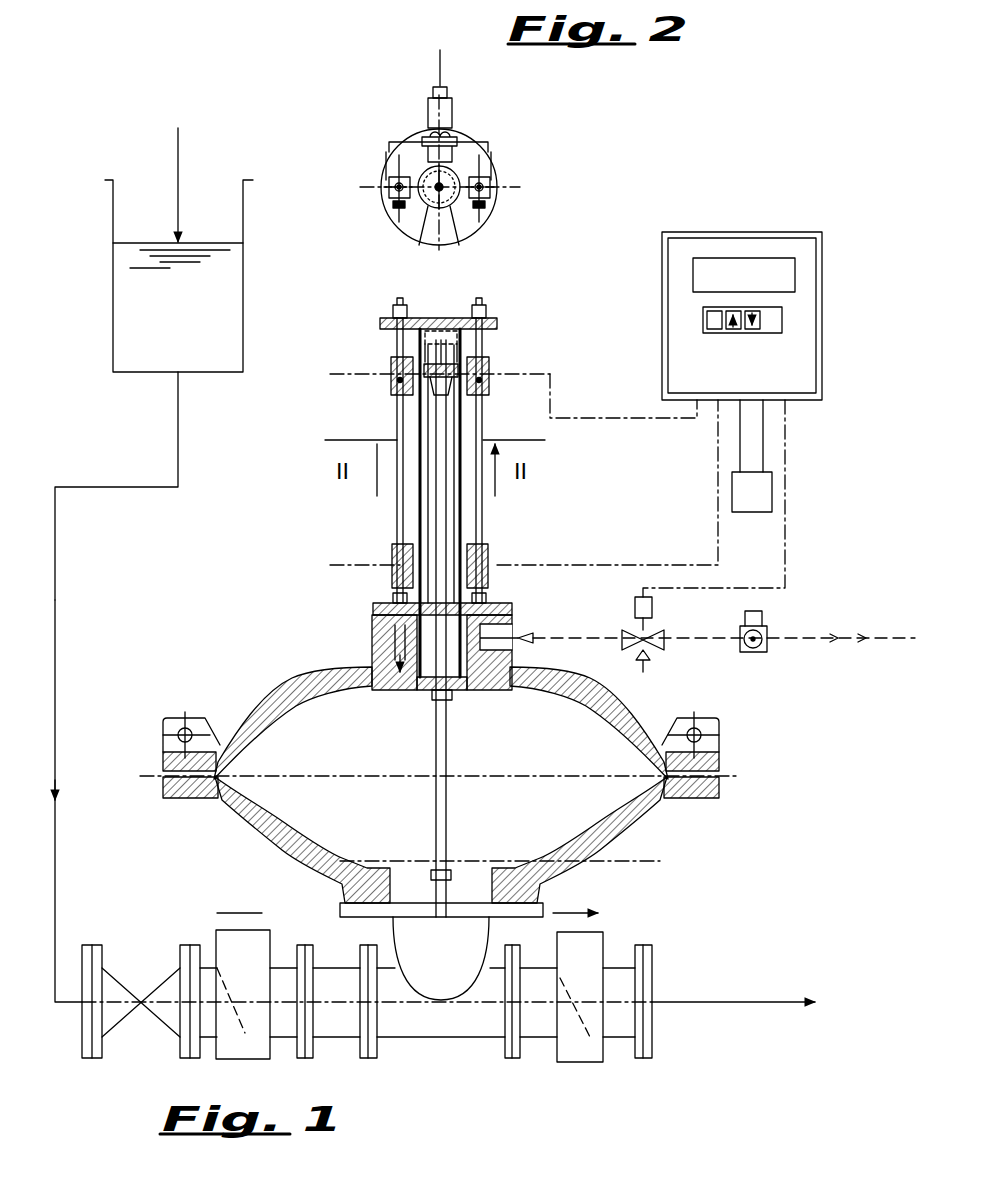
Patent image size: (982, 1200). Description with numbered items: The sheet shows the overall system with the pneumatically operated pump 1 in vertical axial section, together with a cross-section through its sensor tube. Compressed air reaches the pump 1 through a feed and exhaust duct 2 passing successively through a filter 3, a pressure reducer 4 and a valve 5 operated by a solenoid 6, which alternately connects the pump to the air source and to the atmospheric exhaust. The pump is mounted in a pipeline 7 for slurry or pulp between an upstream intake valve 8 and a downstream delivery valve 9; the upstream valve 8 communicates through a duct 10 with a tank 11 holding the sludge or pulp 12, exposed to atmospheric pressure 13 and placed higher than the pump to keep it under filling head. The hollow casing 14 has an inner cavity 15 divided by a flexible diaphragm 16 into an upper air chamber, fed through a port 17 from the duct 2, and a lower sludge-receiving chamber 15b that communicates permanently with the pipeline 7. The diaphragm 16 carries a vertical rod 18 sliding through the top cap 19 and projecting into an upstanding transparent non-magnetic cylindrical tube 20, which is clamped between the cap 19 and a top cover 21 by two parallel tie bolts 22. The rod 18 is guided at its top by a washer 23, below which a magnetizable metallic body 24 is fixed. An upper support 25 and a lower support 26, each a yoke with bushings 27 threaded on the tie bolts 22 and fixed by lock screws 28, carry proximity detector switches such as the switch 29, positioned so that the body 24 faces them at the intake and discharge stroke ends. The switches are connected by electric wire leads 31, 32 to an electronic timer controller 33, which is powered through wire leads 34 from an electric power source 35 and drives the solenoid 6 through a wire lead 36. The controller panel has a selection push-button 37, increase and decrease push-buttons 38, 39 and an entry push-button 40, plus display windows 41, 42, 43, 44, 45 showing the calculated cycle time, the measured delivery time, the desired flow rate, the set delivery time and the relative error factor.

In FIG. 1, the pneumatically operated pump 1 is at (262, 662).
In FIG. 1, the feed and exhaust duct 2 is at (790, 650).
In FIG. 1, the filter 3 is at (840, 650).
In FIG. 1, the pressure reducer 4 is at (742, 652).
In FIG. 1, the valve 5 is at (650, 655).
In FIG. 1, the solenoid 6 is at (635, 607).
In FIG. 1, the pipeline 7 is at (742, 1002).
In FIG. 1, the upstream intake valve 8 is at (240, 1052).
In FIG. 1, the downstream delivery valve 9 is at (577, 1045).
In FIG. 1, the duct 10 is at (62, 628).
In FIG. 1, the tank 11 is at (113, 350).
In FIG. 1, the sludge or pulp 12 is at (179, 276).
In FIG. 1, the atmospheric pressure 13 is at (178, 168).
In FIG. 1, the hollow casing 14 is at (605, 843).
In FIG. 1, the inner cavity 15 is at (313, 810).
In FIG. 1, the sludge-receiving chamber 15b is at (407, 882).
In FIG. 1, the flexible diaphragm 16 is at (483, 690).
In FIG. 1, the port 17 is at (498, 632).
In FIG. 2, the vertical rod 18 is at (438, 210).
In FIG. 1, the vertical rod 18 is at (445, 483).
In FIG. 1, the top closure cover or cap 19 is at (500, 605).
In FIG. 2, the cylindrical tube 20 is at (445, 207).
In FIG. 1, the cylindrical tube 20 is at (420, 523).
In FIG. 2, the top cover 21 is at (415, 225).
In FIG. 1, the top cover 21 is at (393, 318).
In FIG. 2, the tie bolts 22 is at (389, 182).
In FIG. 1, the tie bolts 22 is at (402, 500).
In FIG. 1, the washer 23 is at (452, 355).
In FIG. 1, the magnetizable metallic body 24 is at (467, 378).
In FIG. 2, the upper support 25 is at (393, 150).
In FIG. 1, the upper support 25 is at (385, 361).
In FIG. 1, the lower support 26 is at (385, 550).
In FIG. 2, the bushing 27 is at (394, 190).
In FIG. 1, the bushing 27 is at (388, 387).
In FIG. 2, the lock screws 28 is at (398, 207).
In FIG. 2, the proximity detector switch 29 is at (450, 112).
In FIG. 1, the electric wire lead 31 is at (613, 418).
In FIG. 1, the electric wire lead 32 is at (620, 565).
In FIG. 1, the electronic timer controller 33 is at (660, 230).
In FIG. 1, the wire leads 34 is at (763, 448).
In FIG. 1, the source of supply of electric power 35 is at (772, 495).
In FIG. 1, the electric wire lead 36 is at (785, 560).
In FIG. 1, the push-button 37 is at (712, 330).
In FIG. 1, the push-button 38 is at (730, 330).
In FIG. 1, the push-button 39 is at (752, 330).
In FIG. 1, the push-button 40 is at (775, 330).
In FIG. 1, the window 41 is at (707, 268).
In FIG. 1, the window 42 is at (745, 270).
In FIG. 1, the window 43 is at (780, 270).
In FIG. 1, the window 44 is at (752, 292).
In FIG. 1, the window 45 is at (795, 290).